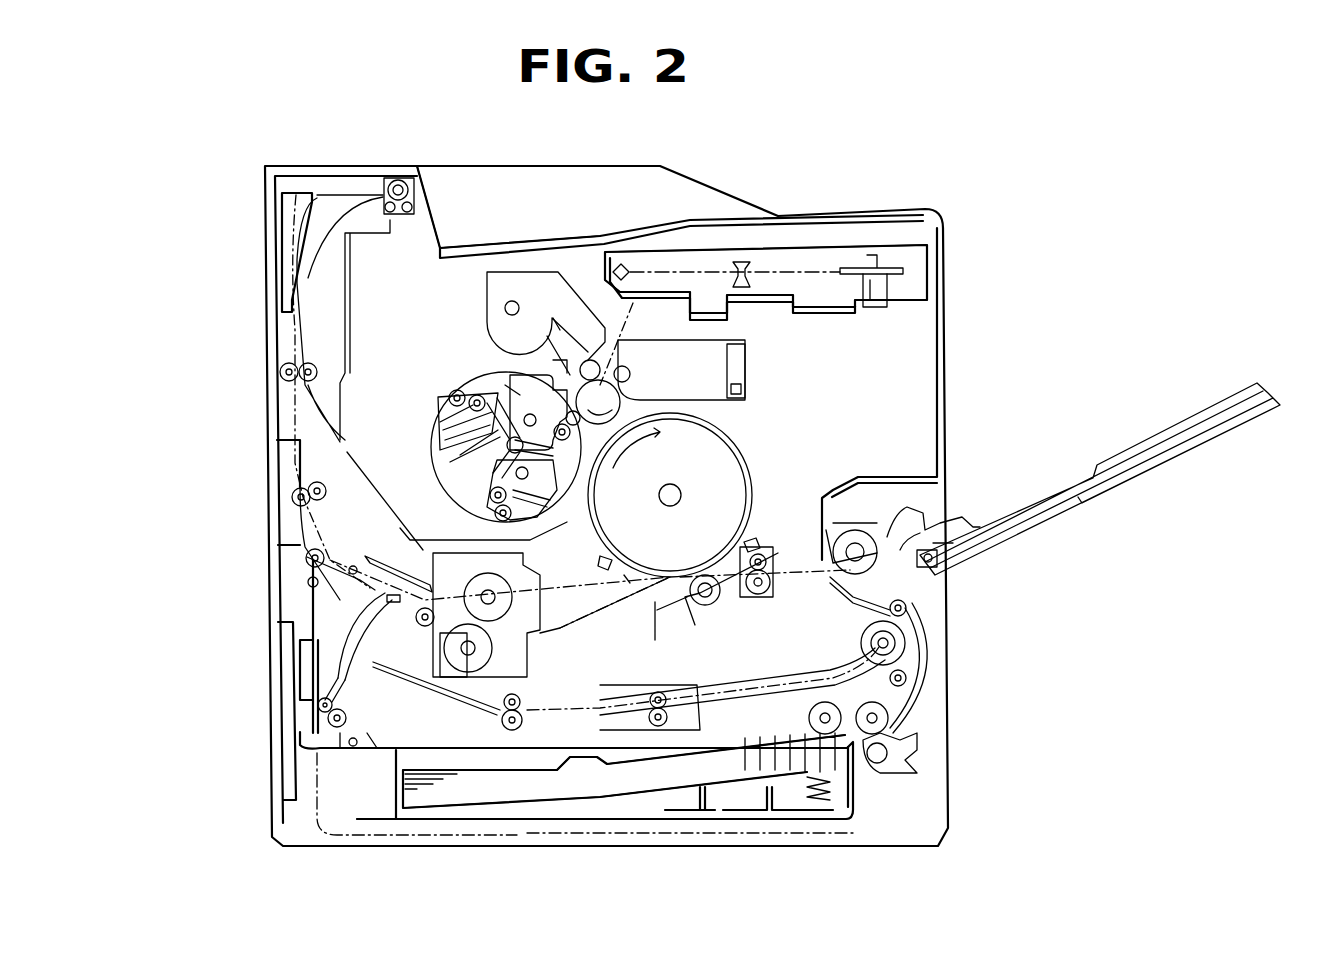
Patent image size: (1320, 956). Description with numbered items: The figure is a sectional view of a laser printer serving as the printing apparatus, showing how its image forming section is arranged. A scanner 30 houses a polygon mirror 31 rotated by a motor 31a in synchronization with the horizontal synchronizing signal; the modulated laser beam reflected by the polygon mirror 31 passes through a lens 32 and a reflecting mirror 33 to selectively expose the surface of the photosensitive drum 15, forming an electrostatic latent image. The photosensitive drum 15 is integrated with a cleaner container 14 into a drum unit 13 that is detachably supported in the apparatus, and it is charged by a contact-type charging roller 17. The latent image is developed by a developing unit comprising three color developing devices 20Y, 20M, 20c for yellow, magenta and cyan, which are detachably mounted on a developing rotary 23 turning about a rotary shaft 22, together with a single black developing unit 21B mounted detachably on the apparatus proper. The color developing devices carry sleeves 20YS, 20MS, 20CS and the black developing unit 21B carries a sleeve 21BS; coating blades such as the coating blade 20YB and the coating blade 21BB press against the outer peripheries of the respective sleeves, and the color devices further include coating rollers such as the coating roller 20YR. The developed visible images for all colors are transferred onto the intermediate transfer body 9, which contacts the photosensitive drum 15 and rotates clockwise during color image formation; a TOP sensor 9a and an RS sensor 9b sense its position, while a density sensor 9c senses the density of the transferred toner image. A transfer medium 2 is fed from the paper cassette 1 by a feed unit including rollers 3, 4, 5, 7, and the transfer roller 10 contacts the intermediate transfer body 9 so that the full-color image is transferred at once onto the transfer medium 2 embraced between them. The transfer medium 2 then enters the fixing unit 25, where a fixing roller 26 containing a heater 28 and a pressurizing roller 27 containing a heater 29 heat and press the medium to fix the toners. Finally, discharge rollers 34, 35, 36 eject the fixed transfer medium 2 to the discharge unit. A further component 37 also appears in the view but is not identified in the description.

The paper cassette 1 is at (784, 820).
The transfer medium 2 is at (728, 752).
The roller 3 is at (808, 722).
The roller 4 is at (866, 705).
The roller 5 is at (880, 770).
The roller 7 is at (860, 645).
The intermediate transfer body 9 is at (738, 470).
The TOP sensor 9a is at (610, 570).
The RS sensor 9b is at (752, 540).
The density sensor 9c is at (627, 585).
The transfer roller 10 is at (705, 612).
The drum unit 13 is at (648, 350).
The cleaner container 14 is at (748, 367).
The photosensitive drum 15 is at (612, 405).
The contact-type charging roller 17 is at (624, 365).
The color developing device 20Y is at (500, 387).
The coating blade 20YB is at (580, 373).
The sleeve 20YS is at (522, 398).
The sleeve 20MS is at (472, 395).
The coating roller 20YR is at (449, 398).
The color developing device 20M is at (470, 450).
The color developing device 20c is at (500, 500).
The sleeve 20CS is at (506, 528).
The black developing unit 21B is at (503, 283).
The sleeve 21BS is at (538, 350).
The coating blade 21BB is at (580, 340).
The rotary shaft 22 is at (470, 480).
The developing rotary 23 is at (455, 470).
The fixing unit 25 is at (508, 572).
The fixing roller 26 is at (500, 600).
The pressurizing roller 27 is at (478, 657).
The heater 28 is at (430, 578).
The heater 29 is at (460, 648).
The scanner 30 is at (832, 248).
The polygon mirror 31 is at (898, 266).
The motor 31a is at (875, 307).
The lens 32 is at (742, 260).
The reflecting mirror 33 is at (622, 262).
The discharge roller 34 is at (292, 500).
The discharge roller 35 is at (282, 374).
The discharge roller 36 is at (400, 178).
The top cover 37 is at (432, 203).